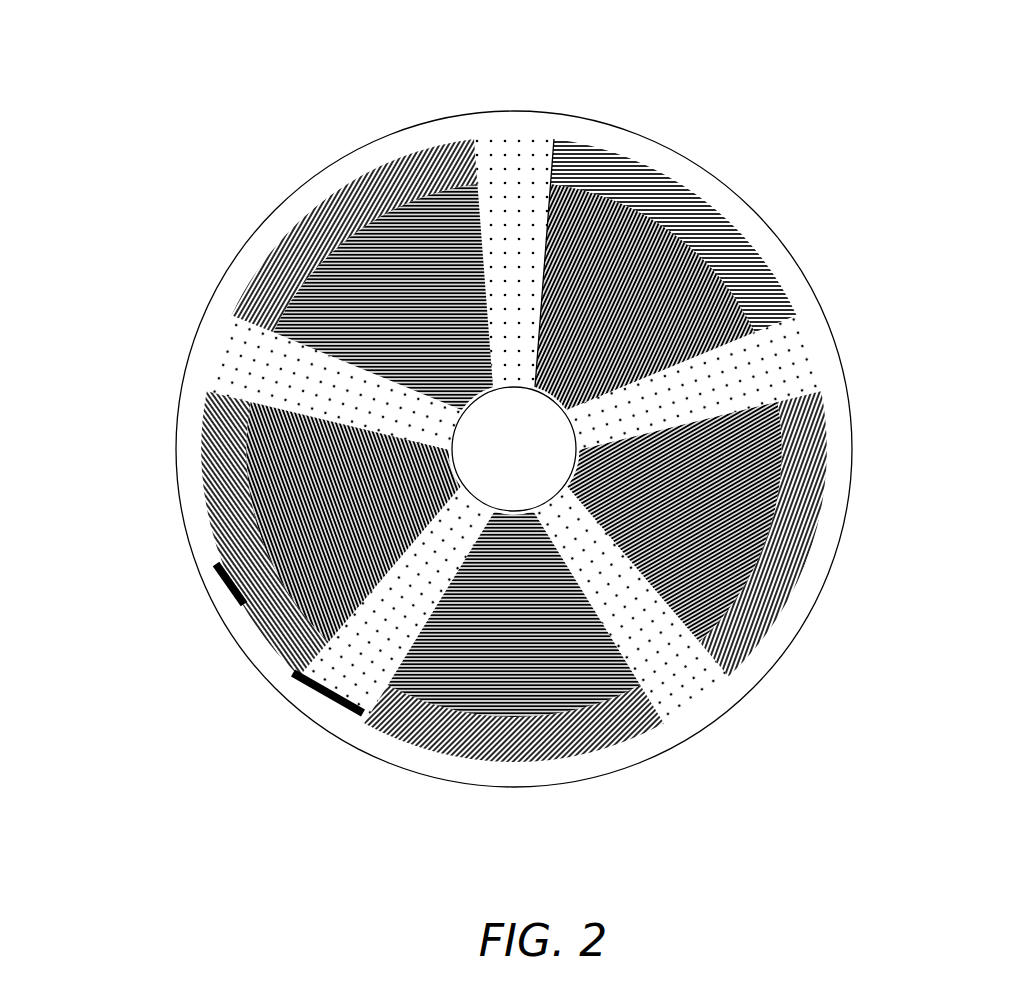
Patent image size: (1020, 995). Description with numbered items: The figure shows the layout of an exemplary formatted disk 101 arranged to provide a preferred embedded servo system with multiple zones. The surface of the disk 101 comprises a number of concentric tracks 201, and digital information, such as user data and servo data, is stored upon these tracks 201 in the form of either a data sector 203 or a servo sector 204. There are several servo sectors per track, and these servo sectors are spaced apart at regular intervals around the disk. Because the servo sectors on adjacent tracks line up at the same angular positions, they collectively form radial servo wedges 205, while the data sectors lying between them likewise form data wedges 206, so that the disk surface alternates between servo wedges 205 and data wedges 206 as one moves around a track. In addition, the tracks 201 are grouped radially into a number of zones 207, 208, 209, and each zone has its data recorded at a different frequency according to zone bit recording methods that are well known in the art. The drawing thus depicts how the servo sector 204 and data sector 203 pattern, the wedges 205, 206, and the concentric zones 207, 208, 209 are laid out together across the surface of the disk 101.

The disk 101 is at (840, 395).
The concentric tracks 201 is at (504, 147).
The data sector 203 is at (225, 582).
The servo sector 204 is at (313, 692).
The servo wedges 205 is at (210, 335).
The data wedges 206 is at (335, 183).
The zone 207 is at (682, 212).
The zone 208 is at (583, 192).
The zone 209 is at (548, 168).